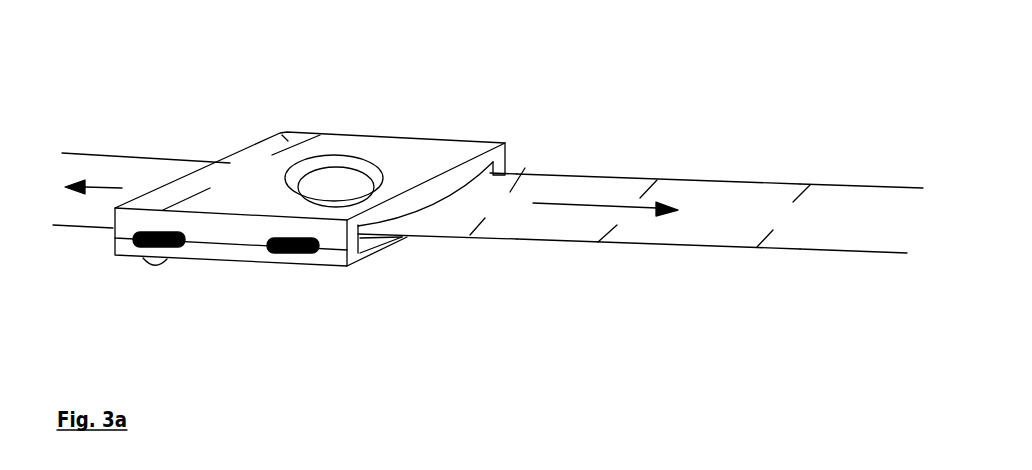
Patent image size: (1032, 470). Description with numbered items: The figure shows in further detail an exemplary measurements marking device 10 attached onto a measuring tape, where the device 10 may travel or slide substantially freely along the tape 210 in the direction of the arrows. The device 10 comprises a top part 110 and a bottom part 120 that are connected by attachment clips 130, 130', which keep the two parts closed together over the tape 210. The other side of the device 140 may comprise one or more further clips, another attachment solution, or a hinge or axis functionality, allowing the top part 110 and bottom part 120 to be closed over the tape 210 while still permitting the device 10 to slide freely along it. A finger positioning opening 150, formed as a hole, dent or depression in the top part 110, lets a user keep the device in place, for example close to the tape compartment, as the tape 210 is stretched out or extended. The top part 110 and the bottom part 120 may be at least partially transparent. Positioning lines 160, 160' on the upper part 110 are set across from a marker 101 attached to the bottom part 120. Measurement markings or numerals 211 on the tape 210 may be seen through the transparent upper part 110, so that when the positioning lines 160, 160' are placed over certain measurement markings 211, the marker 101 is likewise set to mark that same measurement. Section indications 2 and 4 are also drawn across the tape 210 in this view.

The measurements marking device 10 is at (483, 122).
The section line 2 is at (497, 201).
The section line 4 is at (783, 216).
The marker 101 is at (150, 267).
The top part 110 is at (227, 223).
The bottom part 120 is at (232, 250).
The attachment clip 130 is at (347, 289).
The attachment clip 130' is at (103, 280).
The other side of the device 140 is at (373, 127).
The finger positioning opening 150 is at (340, 183).
The positioning line 160 is at (241, 126).
The positioning line 160' is at (141, 156).
The tape 210 is at (833, 253).
The measurement markings/numerals 211 is at (810, 182).